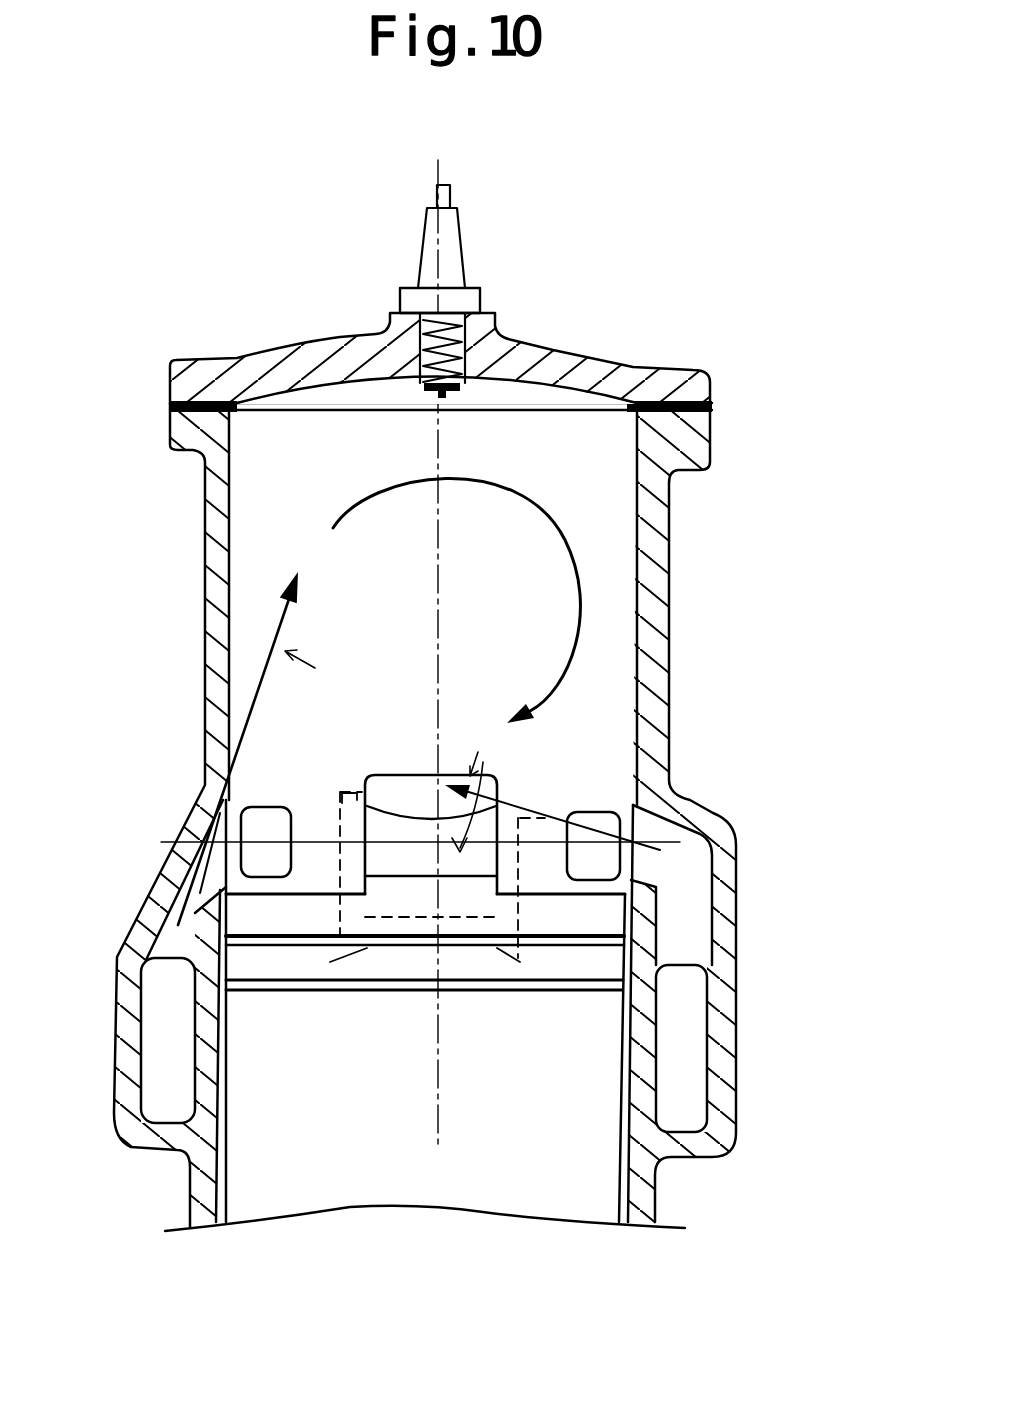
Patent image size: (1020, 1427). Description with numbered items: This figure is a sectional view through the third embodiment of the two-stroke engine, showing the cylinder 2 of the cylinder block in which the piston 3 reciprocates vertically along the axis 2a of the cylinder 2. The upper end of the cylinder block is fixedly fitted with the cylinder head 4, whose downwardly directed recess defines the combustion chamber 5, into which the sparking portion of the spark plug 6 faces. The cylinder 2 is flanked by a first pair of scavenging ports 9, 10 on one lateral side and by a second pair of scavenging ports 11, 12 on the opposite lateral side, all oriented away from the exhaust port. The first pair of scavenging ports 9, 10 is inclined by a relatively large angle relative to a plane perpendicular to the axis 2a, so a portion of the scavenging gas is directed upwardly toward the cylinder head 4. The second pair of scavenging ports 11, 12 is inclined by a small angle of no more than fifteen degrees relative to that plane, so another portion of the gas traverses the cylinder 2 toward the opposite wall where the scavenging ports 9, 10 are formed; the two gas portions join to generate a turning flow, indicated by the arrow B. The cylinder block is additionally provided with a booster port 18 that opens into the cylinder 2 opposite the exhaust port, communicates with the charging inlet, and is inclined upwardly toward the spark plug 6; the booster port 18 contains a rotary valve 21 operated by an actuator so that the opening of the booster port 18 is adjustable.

The cylinder 2 is at (232, 541).
The axis of the cylinder 2a is at (440, 1103).
The piston 3 is at (319, 1163).
The cylinder head 4 is at (243, 380).
The combustion chamber 5 is at (352, 393).
The spark plug 6 is at (467, 310).
The scavenging port 9 is at (182, 924).
The scavenging port 10 is at (250, 806).
The scavenging port 11 is at (668, 830).
The scavenging port 12 is at (600, 812).
The booster port 18 is at (418, 776).
The rotary valve 21 is at (403, 860).
The arrow indicating turning flow B is at (508, 478).